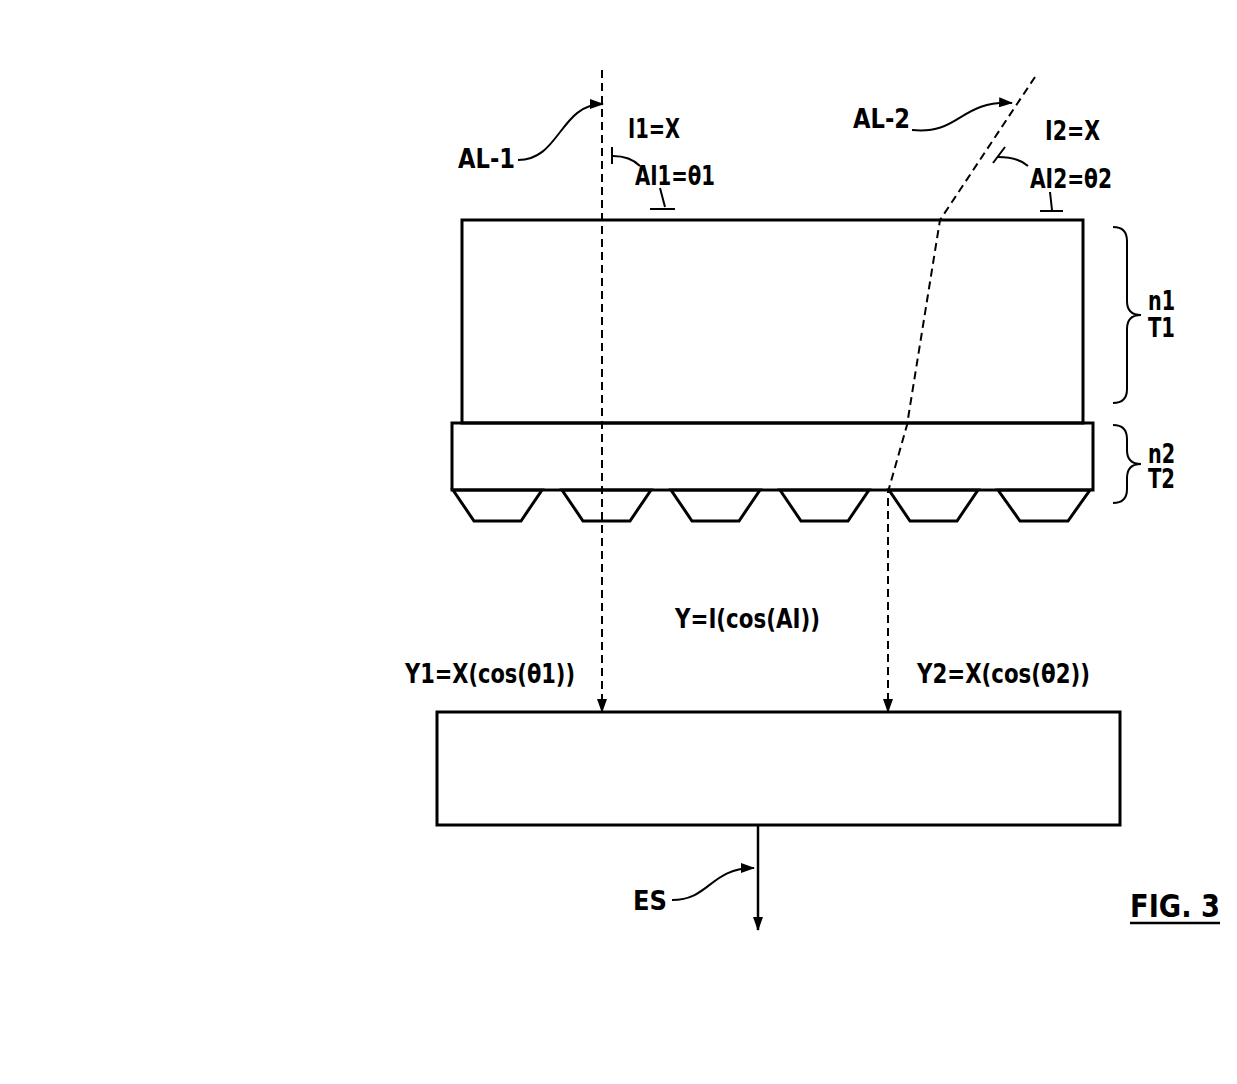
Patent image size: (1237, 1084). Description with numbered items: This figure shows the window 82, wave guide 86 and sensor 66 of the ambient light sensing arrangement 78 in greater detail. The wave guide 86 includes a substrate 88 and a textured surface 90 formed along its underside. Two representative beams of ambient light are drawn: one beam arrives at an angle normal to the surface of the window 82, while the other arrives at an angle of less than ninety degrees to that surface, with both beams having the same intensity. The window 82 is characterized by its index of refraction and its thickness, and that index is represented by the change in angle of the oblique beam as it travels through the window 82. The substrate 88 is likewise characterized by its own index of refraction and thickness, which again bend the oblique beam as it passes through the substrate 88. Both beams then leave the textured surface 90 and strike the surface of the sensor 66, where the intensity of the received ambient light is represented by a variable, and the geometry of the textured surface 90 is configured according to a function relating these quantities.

The sensor 66 is at (778, 788).
The ambient light sensor assembly 78 is at (487, 580).
The window 82 is at (460, 330).
The wave guide 86 is at (335, 440).
The substrate 88 is at (450, 445).
The textured surface 90 is at (462, 514).